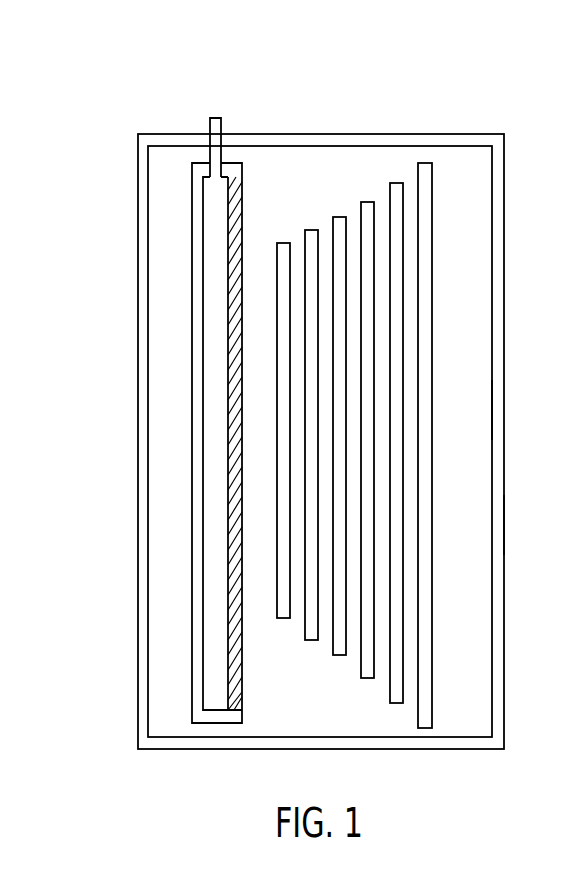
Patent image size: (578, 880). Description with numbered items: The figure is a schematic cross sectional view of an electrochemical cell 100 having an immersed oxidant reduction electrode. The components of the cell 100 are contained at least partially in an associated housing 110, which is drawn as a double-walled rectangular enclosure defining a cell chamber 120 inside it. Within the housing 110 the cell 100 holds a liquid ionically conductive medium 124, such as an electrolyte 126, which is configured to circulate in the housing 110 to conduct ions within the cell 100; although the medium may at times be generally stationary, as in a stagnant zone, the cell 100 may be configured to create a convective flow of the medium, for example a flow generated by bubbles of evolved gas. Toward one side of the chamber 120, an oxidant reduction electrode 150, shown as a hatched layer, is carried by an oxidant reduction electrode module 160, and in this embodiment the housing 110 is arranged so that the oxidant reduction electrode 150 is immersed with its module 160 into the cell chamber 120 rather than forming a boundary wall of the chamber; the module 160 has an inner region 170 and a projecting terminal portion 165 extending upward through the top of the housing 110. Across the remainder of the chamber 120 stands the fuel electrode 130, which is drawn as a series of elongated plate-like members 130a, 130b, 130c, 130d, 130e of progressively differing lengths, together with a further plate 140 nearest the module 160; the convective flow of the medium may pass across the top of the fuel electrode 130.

The electrochemical cell 100 is at (141, 89).
The housing 110 is at (353, 133).
The cell chamber 120 is at (271, 713).
The liquid ionically conductive medium 124 is at (467, 512).
The electrolyte 126 is at (478, 398).
The fuel electrode 130 is at (421, 410).
The first fin 130a is at (428, 178).
The second fin 130b is at (395, 182).
The third fin 130c is at (367, 201).
The fourth fin 130d is at (338, 216).
The fifth fin 130e is at (312, 229).
The fin 140 is at (282, 262).
The oxidant reduction electrode 150 is at (243, 197).
The oxidant reduction electrode module 160 is at (194, 190).
The pin 165 is at (223, 163).
The cavity 170 is at (217, 223).